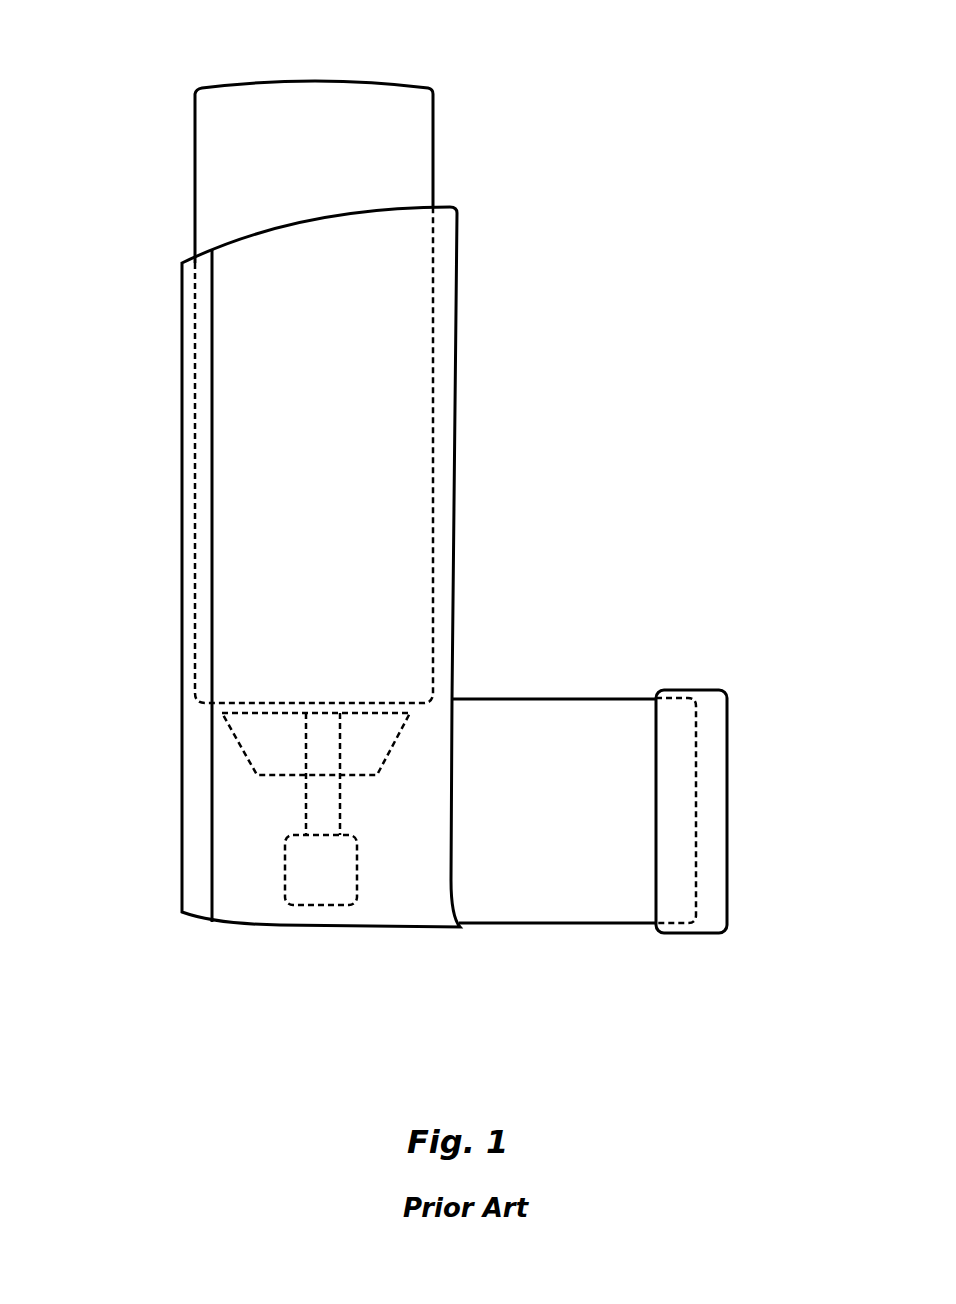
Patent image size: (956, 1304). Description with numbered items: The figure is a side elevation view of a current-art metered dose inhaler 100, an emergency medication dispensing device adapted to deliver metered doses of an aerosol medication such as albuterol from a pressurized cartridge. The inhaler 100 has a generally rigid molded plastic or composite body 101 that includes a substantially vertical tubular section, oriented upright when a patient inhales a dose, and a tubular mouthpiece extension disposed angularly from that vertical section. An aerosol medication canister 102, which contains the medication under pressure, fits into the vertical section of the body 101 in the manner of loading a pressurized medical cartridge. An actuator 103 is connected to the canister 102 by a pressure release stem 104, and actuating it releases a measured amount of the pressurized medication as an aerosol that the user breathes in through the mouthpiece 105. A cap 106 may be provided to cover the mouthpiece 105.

The metered dose inhaler 100 is at (660, 221).
The body 101 is at (455, 446).
The aerosol medication canister 102 is at (195, 157).
The actuator 103 is at (285, 873).
The pressure release stem 104 is at (253, 767).
The mouthpiece 105 is at (696, 805).
The cap 106 is at (698, 690).